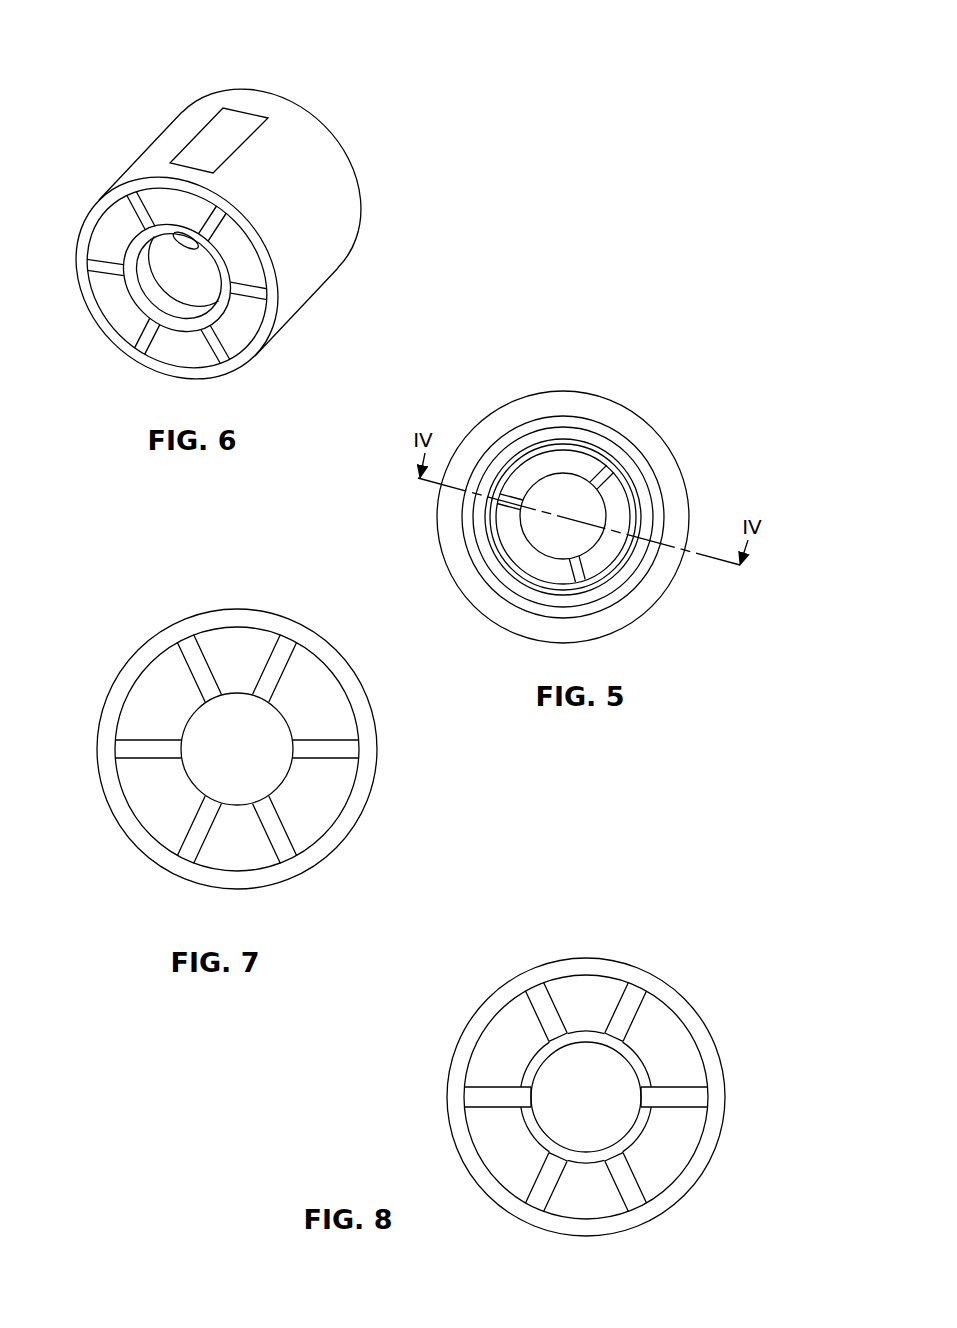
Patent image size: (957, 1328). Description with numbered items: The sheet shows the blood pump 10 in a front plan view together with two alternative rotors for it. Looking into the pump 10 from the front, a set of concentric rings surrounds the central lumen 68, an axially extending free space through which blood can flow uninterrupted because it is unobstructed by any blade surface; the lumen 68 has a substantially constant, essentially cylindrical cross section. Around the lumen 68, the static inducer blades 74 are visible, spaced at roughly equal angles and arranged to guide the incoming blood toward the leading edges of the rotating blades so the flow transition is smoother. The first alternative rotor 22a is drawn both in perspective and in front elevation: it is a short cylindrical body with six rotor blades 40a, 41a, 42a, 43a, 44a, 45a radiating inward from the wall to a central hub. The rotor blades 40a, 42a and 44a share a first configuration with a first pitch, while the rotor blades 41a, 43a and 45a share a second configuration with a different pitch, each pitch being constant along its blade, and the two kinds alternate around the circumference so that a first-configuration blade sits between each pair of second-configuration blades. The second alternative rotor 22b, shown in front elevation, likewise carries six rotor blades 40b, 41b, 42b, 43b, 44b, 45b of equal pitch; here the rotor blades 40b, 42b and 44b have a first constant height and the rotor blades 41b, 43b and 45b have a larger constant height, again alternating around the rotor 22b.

In FIG. 5, the fuel injector / nozzle assembly 10 is at (545, 356).
In FIG. 5, the lumen 68 is at (563, 516).
In FIG. 5, the inducer blades 74 is at (617, 503).
In FIG. 6, the rotor 22a is at (120, 85).
In FIG. 7, the rotor 22a is at (90, 650).
In FIG. 8, the rotor 22b is at (424, 1057).
In FIG. 6, the rotor blade 40a is at (117, 230).
In FIG. 7, the rotor blade 40a is at (153, 673).
In FIG. 6, the rotor blade 41a is at (168, 217).
In FIG. 7, the rotor blade 41a is at (233, 633).
In FIG. 6, the rotor blade 42a is at (247, 263).
In FIG. 7, the rotor blade 42a is at (313, 688).
In FIG. 6, the rotor blade 43a is at (248, 323).
In FIG. 7, the rotor blade 43a is at (317, 805).
In FIG. 6, the rotor blade 44a is at (197, 350).
In FIG. 7, the rotor blade 44a is at (232, 858).
In FIG. 6, the rotor blade 45a is at (112, 282).
In FIG. 7, the rotor blade 45a is at (147, 807).
In FIG. 8, the rotor blade 40b is at (504, 1020).
In FIG. 8, the rotor blade 41b is at (585, 983).
In FIG. 8, the rotor blade 42b is at (665, 1035).
In FIG. 8, the rotor blade 43b is at (668, 1153).
In FIG. 8, the rotor blade 44b is at (583, 1207).
In FIG. 8, the rotor blade 45b is at (498, 1155).